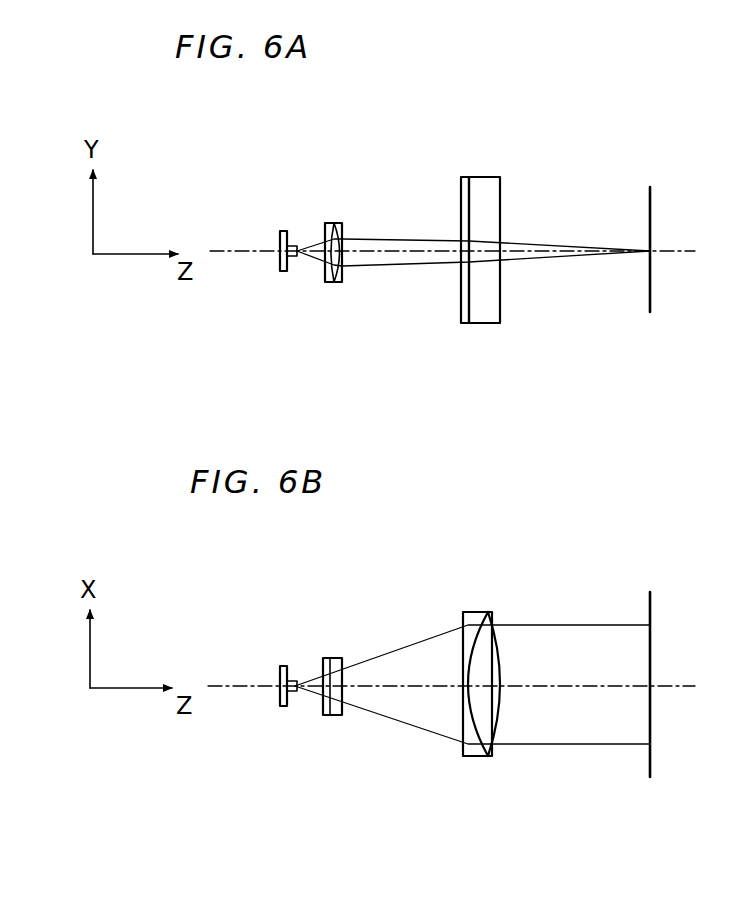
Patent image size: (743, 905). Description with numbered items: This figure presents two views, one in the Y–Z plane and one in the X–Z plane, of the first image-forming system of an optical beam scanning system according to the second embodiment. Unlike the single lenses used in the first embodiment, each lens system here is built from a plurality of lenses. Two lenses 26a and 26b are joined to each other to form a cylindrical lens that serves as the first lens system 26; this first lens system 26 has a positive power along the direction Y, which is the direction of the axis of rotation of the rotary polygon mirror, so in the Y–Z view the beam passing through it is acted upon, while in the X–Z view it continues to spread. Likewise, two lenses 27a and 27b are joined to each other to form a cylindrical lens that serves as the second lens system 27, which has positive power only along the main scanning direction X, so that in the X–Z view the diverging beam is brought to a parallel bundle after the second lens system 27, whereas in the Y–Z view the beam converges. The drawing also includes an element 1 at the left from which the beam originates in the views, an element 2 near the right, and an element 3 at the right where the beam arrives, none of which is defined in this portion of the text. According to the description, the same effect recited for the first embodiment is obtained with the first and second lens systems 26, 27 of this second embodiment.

In FIG. 6A, the semiconductor laser (light source) 1 is at (281, 236).
In FIG. 6B, the semiconductor laser (light source) 1 is at (280, 668).
In FIG. 6A, the photosensitive medium / scanned surface 2 is at (598, 179).
In FIG. 6B, the photosensitive medium / scanned surface 2 is at (575, 598).
In FIG. 6A, the scanning surface 3 is at (661, 211).
In FIG. 6B, the scanning surface 3 is at (639, 651).
In FIG. 6A, the first lens system 26 is at (341, 192).
In FIG. 6B, the first lens system 26 is at (306, 746).
In FIG. 6A, the lens 26a is at (329, 222).
In FIG. 6B, the lens 26a is at (324, 716).
In FIG. 6A, the lens 26b is at (375, 220).
In FIG. 6B, the lens 26b is at (357, 721).
In FIG. 6A, the second lens system 27 is at (496, 193).
In FIG. 6B, the second lens system 27 is at (500, 740).
In FIG. 6A, the lens 27a is at (466, 177).
In FIG. 6B, the lens 27a is at (476, 757).
In FIG. 6A, the lens 27b is at (519, 218).
In FIG. 6B, the lens 27b is at (521, 715).